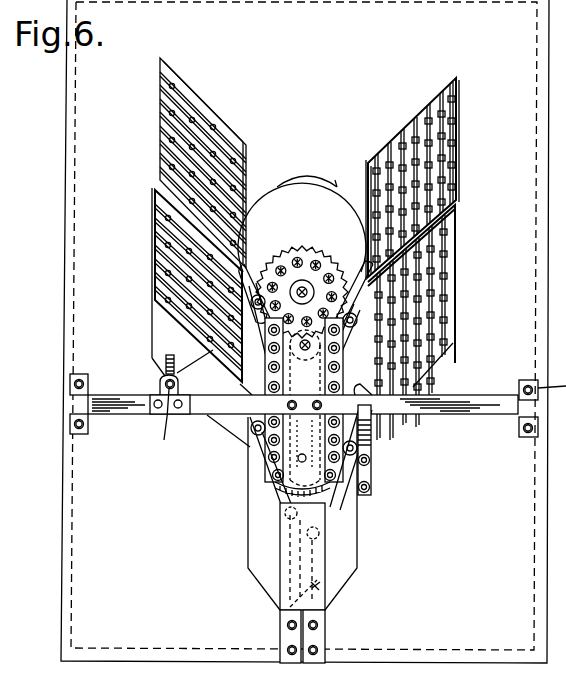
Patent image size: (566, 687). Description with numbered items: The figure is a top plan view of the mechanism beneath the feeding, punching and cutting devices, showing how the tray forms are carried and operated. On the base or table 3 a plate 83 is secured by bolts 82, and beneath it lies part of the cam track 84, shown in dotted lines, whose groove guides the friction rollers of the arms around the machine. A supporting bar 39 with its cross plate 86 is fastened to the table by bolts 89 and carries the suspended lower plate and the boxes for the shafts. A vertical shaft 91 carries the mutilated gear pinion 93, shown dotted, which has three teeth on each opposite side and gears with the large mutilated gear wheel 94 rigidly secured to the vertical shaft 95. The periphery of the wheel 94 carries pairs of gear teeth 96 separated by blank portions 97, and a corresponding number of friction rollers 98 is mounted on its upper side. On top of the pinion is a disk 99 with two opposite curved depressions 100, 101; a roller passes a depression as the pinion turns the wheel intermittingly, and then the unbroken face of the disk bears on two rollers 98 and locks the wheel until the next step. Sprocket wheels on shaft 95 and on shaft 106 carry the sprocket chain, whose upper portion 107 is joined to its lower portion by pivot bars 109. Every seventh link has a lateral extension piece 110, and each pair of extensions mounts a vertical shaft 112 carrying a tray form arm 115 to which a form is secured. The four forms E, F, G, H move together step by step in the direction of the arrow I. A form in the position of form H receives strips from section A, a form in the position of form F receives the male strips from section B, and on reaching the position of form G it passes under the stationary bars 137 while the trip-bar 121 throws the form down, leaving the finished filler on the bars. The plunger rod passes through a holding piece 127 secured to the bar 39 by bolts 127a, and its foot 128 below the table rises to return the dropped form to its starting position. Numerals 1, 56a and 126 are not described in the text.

The machine frame 1 is at (312, 331).
The base or table 3 is at (103, 538).
The tray form E is at (162, 131).
The tray form H is at (160, 256).
The tray form F is at (445, 142).
The tray form G is at (440, 306).
The arrow I is at (307, 183).
The supporting bar 39 is at (472, 420).
The bolts 56a is at (323, 405).
The bolts 82 is at (320, 626).
The plate 83 is at (284, 637).
The cam track 84 is at (318, 591).
The cross plate 86 is at (288, 441).
The bolts 89 is at (72, 426).
The vertical shaft 91 is at (300, 345).
The mutilated gear pinion 93 is at (300, 354).
The mutilated gear wheel 94 is at (308, 286).
The vertical shaft 95 is at (334, 272).
The gear teeth 96 is at (299, 256).
The blank portions 97 is at (283, 264).
The friction rollers 98 is at (257, 246).
The disk 99 is at (322, 340).
The curved depression 100 is at (336, 291).
The curved depression 101 is at (247, 426).
The shaft 106 is at (268, 479).
The upper portion of sprocket chain 107 is at (352, 500).
The pivot bars 109 is at (270, 430).
The lateral extension piece 110 is at (262, 441).
The vertical shaft 112 is at (362, 457).
The tray form arm 115 is at (249, 272).
The trip-bar 121 is at (368, 432).
The rod 126 is at (169, 398).
The holding piece 127 is at (158, 391).
The bolts 127a is at (155, 413).
The foot 128 is at (176, 366).
The stationary bars 137 is at (455, 378).